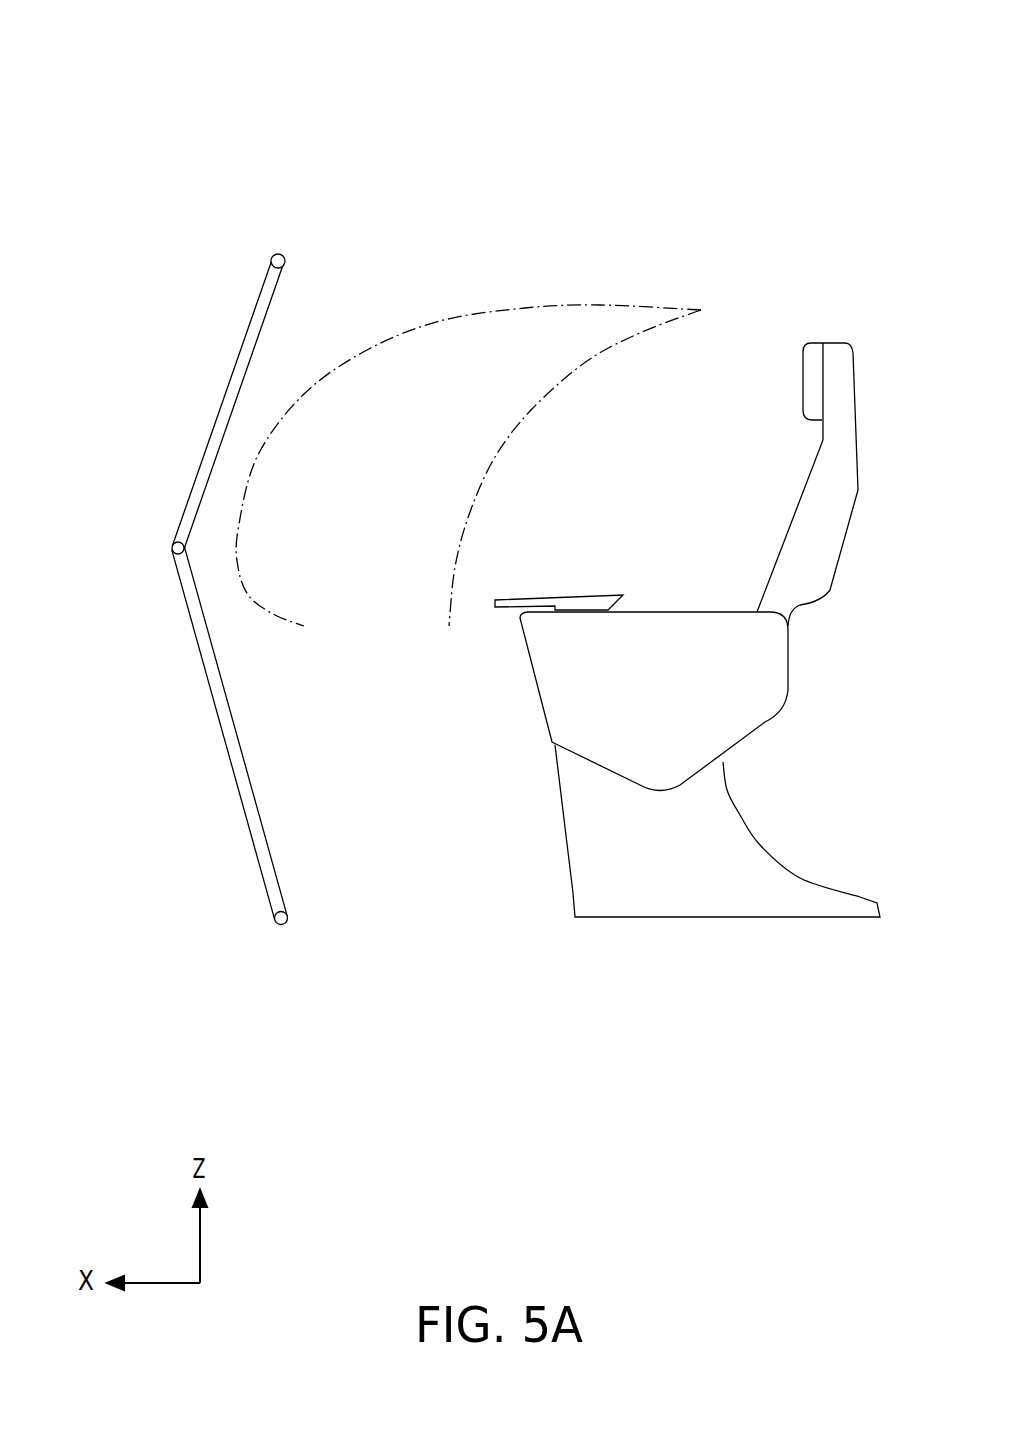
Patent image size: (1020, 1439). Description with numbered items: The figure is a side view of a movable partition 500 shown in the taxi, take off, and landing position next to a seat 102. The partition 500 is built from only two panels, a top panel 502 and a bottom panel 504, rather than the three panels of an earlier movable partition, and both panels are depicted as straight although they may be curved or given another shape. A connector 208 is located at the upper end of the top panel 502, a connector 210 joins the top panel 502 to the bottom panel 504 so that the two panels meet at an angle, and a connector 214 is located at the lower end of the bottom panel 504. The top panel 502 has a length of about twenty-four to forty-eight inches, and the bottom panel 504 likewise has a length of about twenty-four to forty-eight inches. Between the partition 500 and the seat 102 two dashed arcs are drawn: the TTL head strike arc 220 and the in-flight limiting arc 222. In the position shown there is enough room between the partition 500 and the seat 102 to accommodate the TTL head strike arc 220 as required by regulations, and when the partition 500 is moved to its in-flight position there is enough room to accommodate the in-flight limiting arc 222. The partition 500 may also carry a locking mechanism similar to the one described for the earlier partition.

The movable partition 500 is at (228, 108).
The seat 102 is at (772, 668).
The connector 208 is at (272, 262).
The connector 210 is at (174, 548).
The connector 214 is at (276, 922).
The TTL head strike arc 220 is at (539, 306).
The in-flight limiting arc 222 is at (704, 314).
The top panel 502 is at (228, 399).
The bottom panel 504 is at (243, 802).